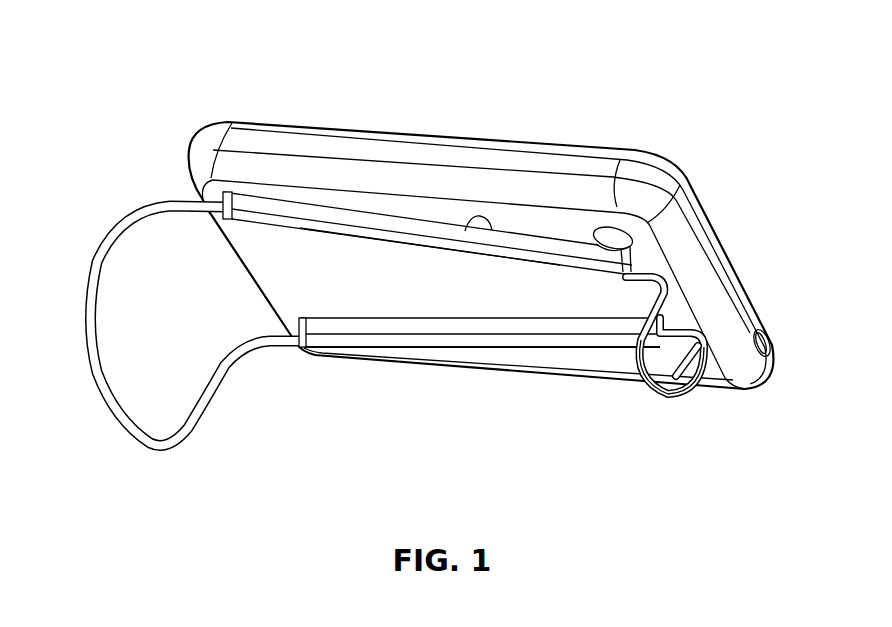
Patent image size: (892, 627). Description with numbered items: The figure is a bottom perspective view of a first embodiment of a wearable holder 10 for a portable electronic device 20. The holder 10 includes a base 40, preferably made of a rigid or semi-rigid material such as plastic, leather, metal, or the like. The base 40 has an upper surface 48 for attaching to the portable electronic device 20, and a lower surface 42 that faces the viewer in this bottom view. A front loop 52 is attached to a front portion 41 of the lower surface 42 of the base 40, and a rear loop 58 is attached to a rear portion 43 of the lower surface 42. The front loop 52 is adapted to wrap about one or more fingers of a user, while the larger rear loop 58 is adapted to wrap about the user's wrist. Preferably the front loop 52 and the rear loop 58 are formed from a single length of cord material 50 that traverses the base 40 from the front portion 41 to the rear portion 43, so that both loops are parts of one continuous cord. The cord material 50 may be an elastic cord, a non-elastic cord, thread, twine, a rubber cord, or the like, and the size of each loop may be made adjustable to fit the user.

The wearable holder 10 is at (338, 424).
The portable electronic device 20 is at (418, 153).
The base 40 is at (390, 216).
The front portion 41 is at (621, 268).
The lower surface 42 is at (453, 247).
The rear portion 43 is at (240, 217).
The upper surface 48 is at (490, 230).
The cord material 50 is at (174, 337).
The front loop 52 is at (657, 388).
The rear loop 58 is at (120, 430).